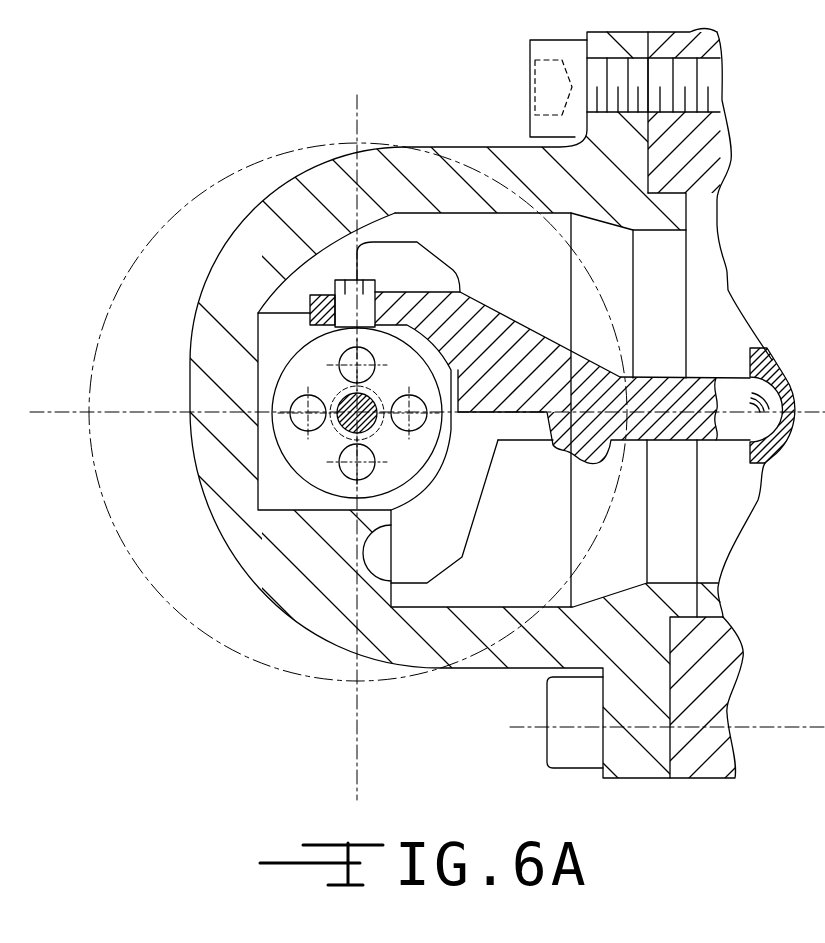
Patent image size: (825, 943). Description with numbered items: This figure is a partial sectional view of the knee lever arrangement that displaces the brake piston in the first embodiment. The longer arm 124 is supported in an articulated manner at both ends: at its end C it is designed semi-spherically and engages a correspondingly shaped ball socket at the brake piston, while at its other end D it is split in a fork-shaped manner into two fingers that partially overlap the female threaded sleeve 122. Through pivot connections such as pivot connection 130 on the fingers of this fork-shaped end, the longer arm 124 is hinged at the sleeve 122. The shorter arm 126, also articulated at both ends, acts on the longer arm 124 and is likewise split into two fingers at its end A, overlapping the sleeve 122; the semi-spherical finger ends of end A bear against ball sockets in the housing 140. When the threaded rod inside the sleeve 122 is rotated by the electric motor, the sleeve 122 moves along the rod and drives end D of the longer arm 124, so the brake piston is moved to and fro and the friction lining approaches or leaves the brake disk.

The housing 140 is at (293, 208).
The pivot connection 130 is at (347, 280).
The end D of the longer arm D is at (310, 290).
The longer arm 124 is at (500, 328).
The female threaded sleeve 122 is at (305, 462).
The shorter arm 126 is at (443, 533).
The end A of the shorter arm A is at (377, 567).
The end C of the longer arm C is at (773, 377).